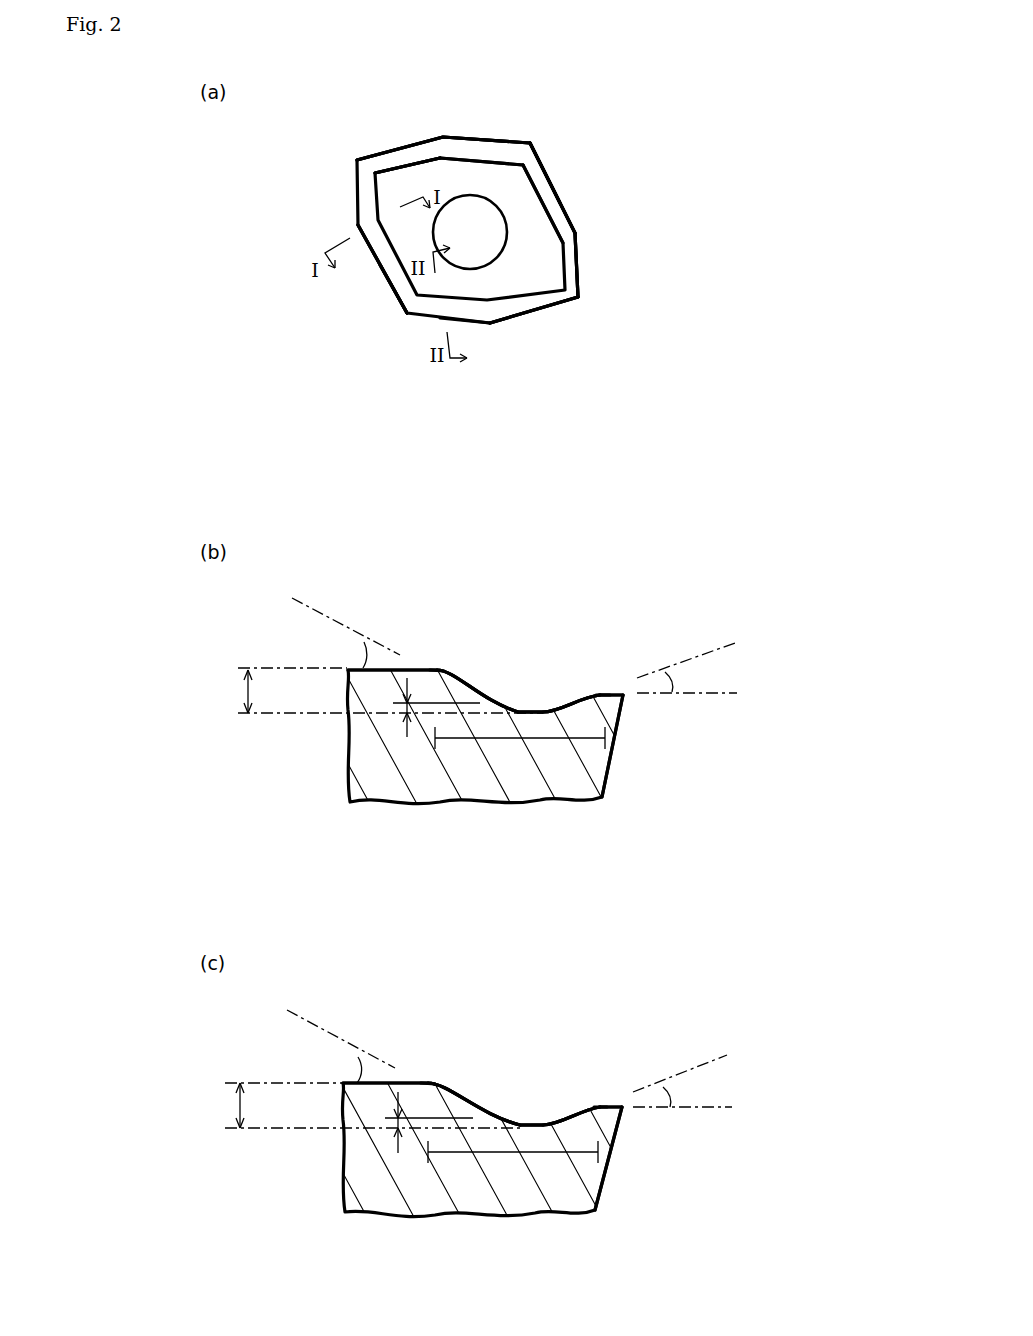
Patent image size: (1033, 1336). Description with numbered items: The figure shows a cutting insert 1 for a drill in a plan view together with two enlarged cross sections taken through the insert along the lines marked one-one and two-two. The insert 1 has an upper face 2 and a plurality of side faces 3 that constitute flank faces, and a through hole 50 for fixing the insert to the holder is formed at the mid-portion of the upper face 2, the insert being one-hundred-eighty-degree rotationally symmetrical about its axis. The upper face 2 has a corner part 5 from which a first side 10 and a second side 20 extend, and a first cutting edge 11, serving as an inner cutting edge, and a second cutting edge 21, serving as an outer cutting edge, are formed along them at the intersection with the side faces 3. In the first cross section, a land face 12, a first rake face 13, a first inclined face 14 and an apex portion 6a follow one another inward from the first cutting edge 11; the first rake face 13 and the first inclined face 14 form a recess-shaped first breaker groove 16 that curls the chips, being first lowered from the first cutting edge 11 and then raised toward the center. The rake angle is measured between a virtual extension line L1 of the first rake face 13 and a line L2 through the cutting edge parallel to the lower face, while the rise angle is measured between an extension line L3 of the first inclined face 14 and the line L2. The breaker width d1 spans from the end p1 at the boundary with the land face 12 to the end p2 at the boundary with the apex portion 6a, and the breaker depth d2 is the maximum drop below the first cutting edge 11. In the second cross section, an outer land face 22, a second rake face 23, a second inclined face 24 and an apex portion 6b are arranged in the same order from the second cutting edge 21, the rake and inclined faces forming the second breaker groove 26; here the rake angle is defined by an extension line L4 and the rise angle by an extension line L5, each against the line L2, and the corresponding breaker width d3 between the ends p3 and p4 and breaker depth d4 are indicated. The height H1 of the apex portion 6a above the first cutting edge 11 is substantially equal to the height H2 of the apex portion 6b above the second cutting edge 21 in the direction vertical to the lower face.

The insert 1 is at (340, 158).
The upper face 2 is at (530, 270).
The side face 3 is at (532, 317).
The corner part 5 is at (530, 147).
The apex portion 6a is at (523, 217).
The apex portion 6b is at (462, 177).
The first side 10 is at (600, 128).
The first cutting edge 11 is at (627, 693).
The land face 12 is at (617, 695).
The first rake face 13 is at (538, 178).
The first inclined face 14 is at (483, 697).
The first breaker groove 16 is at (585, 557).
The second side 20 is at (348, 95).
The second cutting edge 21 is at (623, 1105).
The outer land face 22 is at (613, 1107).
The second rake face 23 is at (385, 160).
The second inclined face 24 is at (480, 1112).
The second breaker groove 26 is at (578, 967).
The through hole 50 is at (492, 232).
The first cutting edge side end p1 is at (607, 693).
The apex portion side end p2 is at (437, 670).
The second cutting edge side end p3 is at (600, 1107).
The apex portion side end p4 is at (427, 1083).
The virtual extension line L1 is at (704, 647).
The line parallel to the lower face L2 is at (310, 713).
The virtual extension line L3 is at (337, 620).
The virtual extension line L4 is at (703, 1062).
The virtual extension line L5 is at (333, 1033).
The distance H1 is at (273, 690).
The distance H2 is at (270, 1105).
The distance d1 is at (520, 747).
The distance d2 is at (353, 763).
The distance d3 is at (513, 1162).
The distance d4 is at (345, 1178).